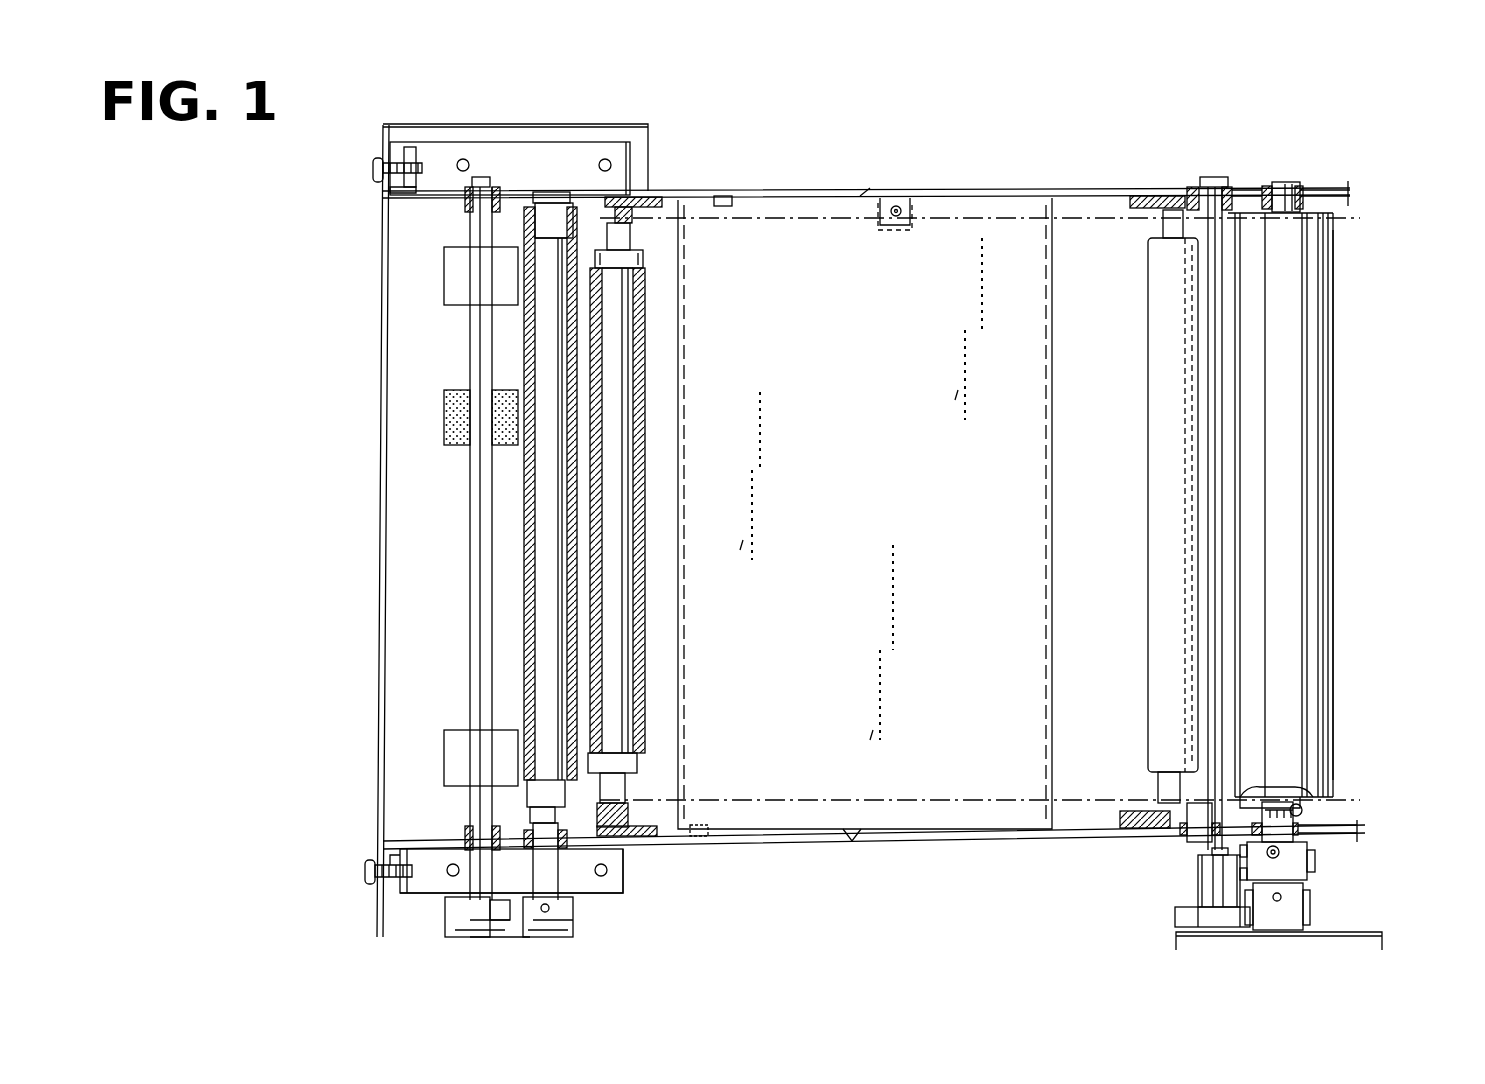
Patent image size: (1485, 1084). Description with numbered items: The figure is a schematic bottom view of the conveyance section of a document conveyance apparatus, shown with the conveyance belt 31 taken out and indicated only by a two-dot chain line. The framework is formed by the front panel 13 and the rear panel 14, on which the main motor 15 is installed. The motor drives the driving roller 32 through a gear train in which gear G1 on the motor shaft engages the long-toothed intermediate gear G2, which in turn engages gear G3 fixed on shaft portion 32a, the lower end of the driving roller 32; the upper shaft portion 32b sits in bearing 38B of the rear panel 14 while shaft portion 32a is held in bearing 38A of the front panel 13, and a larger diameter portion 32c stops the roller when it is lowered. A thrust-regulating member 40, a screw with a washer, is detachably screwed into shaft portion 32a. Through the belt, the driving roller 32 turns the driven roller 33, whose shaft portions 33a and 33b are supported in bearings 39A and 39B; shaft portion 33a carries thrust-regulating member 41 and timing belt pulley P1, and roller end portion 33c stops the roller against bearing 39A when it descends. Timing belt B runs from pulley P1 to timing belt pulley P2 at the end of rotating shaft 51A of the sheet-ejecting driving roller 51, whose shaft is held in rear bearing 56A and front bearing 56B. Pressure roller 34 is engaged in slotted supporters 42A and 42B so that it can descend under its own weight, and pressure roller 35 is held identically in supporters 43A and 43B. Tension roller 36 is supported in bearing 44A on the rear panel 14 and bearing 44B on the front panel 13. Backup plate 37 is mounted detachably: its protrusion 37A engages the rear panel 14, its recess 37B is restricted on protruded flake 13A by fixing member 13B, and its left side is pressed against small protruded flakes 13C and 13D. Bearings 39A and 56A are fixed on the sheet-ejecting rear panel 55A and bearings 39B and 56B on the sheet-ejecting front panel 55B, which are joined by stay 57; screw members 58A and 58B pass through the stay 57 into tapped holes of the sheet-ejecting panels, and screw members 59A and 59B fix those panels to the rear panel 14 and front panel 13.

The front panel 13 is at (965, 188).
The protruded flake 13A is at (895, 230).
The fixing member 13B is at (900, 188).
The small protruded flake 13C is at (740, 186).
The small protruded flake 13D is at (710, 840).
The rear panel 14 is at (382, 908).
The main motor 15 is at (1176, 948).
The conveyance belt 31 is at (1325, 585).
The driving roller 32 is at (1310, 510).
The shaft portion 32a is at (1310, 740).
The shaft portion 32b is at (1335, 215).
The larger diameter portion 32c is at (1305, 775).
The driven roller 33 is at (520, 455).
The shaft portion 33a is at (550, 760).
The shaft portion 33b is at (555, 200).
The roller end portion 33c is at (530, 801).
The pressure roller 34 is at (1155, 330).
The pressure roller 35 is at (645, 428).
The tension roller 36 is at (1210, 177).
The backup plate 37 is at (1050, 498).
The protrusion 37A is at (855, 841).
The recess 37B is at (870, 188).
The bearing 38A is at (1320, 833).
The bearing 38B is at (1300, 180).
The bearing 39A is at (570, 862).
The bearing 39B is at (640, 230).
The thrust-regulating member 40 is at (1305, 800).
The thrust-regulating member 41 is at (529, 861).
The supporter 42A is at (1160, 828).
The supporter 42B is at (1150, 203).
The supporter 43A is at (645, 846).
The supporter 43B is at (625, 208).
The bearing 44A is at (1190, 835).
The bearing 44B is at (1275, 148).
The sheet-ejecting driving roller 51 is at (445, 621).
The rotating shaft 51A is at (465, 553).
The sheet-ejecting rear panel 55A is at (620, 893).
The sheet-ejecting front panel 55B is at (500, 158).
The rear bearing 56A is at (460, 825).
The front bearing 56B is at (465, 206).
The stay 57 is at (378, 411).
The screw member 58A is at (390, 864).
The screw member 58B is at (400, 168).
The screw member 59A is at (460, 847).
The screw member 59B is at (460, 166).
The gear G1 is at (1310, 912).
The intermediate gear G2 is at (1195, 885).
The gear G3 is at (1315, 862).
The timing belt pulley P1 is at (560, 940).
The timing belt pulley P2 is at (445, 945).
The timing belt B is at (505, 940).